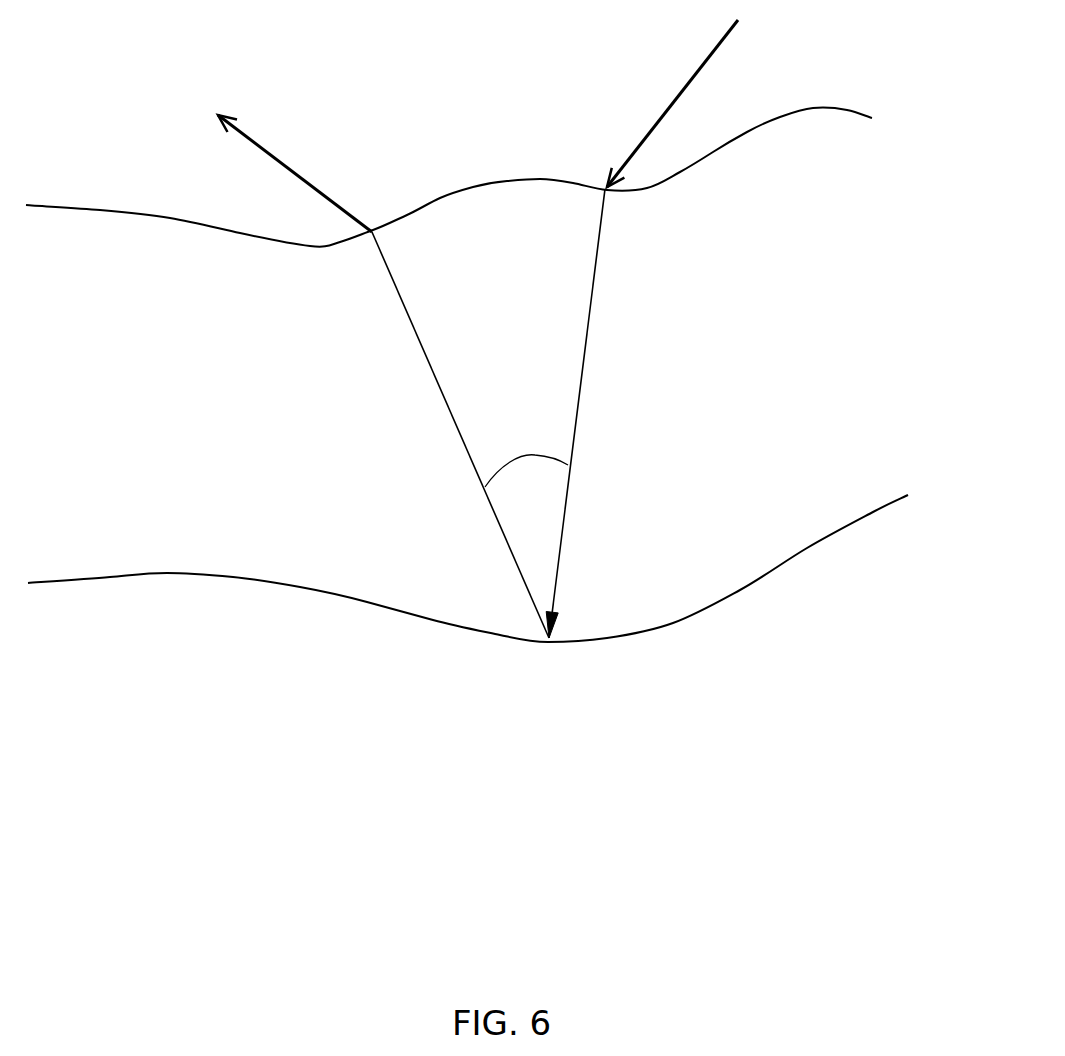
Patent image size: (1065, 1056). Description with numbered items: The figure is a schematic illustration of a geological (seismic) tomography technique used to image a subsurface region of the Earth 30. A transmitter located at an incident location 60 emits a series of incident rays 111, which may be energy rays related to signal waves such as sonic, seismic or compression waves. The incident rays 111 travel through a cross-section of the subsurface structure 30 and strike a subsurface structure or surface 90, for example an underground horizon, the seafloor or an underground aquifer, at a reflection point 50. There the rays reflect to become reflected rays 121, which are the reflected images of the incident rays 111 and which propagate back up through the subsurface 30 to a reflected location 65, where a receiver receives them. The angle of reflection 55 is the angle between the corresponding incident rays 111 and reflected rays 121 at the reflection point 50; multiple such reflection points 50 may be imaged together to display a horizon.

The subsurface region of the Earth 30 is at (172, 390).
The reflection point 50 is at (553, 608).
The angle of reflection 55 is at (518, 455).
The incident location 60 is at (707, 157).
The reflected location 65 is at (372, 229).
The subsurface structure or surface 90 is at (748, 585).
The incident rays 111 is at (590, 320).
The reflected rays 121 is at (423, 340).